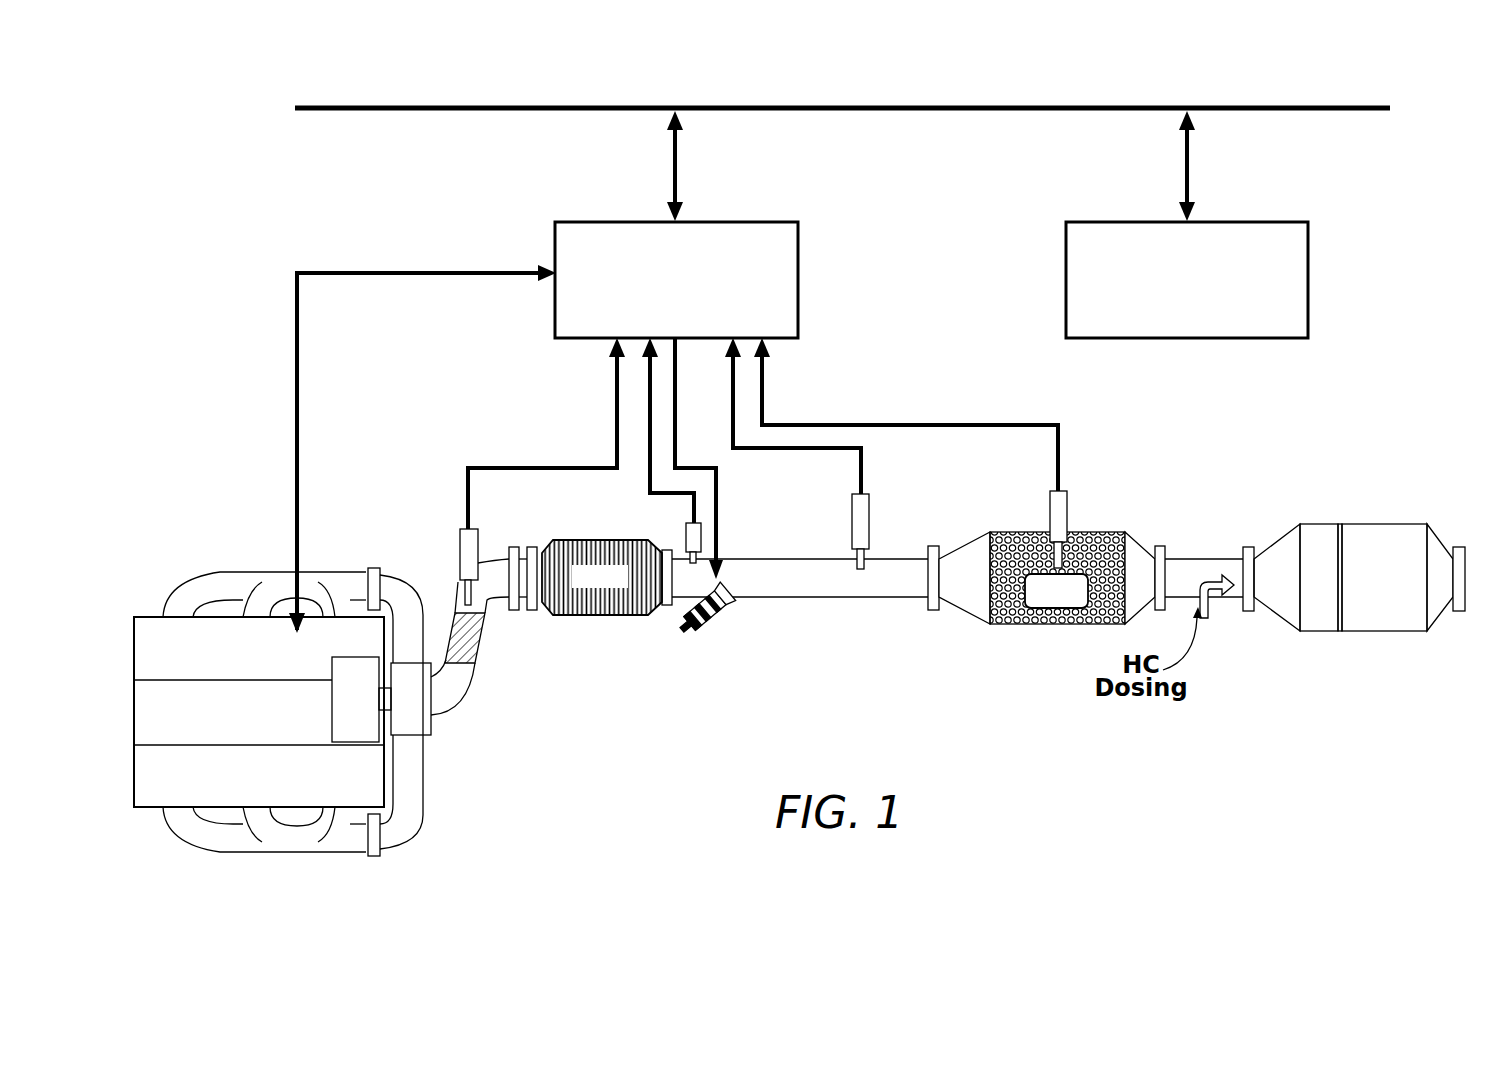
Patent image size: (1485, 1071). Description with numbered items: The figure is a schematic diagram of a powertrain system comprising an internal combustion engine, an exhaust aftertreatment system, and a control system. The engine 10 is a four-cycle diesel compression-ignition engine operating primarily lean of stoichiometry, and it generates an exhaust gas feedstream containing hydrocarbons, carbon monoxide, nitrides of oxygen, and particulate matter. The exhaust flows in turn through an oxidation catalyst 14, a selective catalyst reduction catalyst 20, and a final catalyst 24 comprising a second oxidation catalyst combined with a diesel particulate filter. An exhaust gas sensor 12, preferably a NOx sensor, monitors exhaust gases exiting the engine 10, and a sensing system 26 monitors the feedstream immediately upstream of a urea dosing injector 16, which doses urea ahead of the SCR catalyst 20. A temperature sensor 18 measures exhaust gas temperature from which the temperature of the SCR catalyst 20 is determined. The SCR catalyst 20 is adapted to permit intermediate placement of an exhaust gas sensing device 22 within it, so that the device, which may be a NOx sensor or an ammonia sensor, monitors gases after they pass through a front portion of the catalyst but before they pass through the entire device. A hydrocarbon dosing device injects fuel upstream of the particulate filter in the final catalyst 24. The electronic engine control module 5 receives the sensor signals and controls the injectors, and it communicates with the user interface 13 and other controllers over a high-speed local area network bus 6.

The electronic engine control module 5 is at (749, 212).
The high-speed local area network bus 6 is at (1075, 118).
The internal combustion engine 10 is at (180, 578).
The exhaust gas sensor 12 is at (456, 540).
The user interface 13 is at (1259, 212).
The oxidation catalyst 14 is at (600, 626).
The urea dosing injector 16 is at (715, 642).
The temperature sensor 18 is at (842, 519).
The selective catalyst reduction catalyst 20 is at (1030, 634).
The exhaust gas sensing device 22 is at (1078, 500).
The final catalyst 24 is at (1384, 643).
The sensing system 26 is at (677, 535).